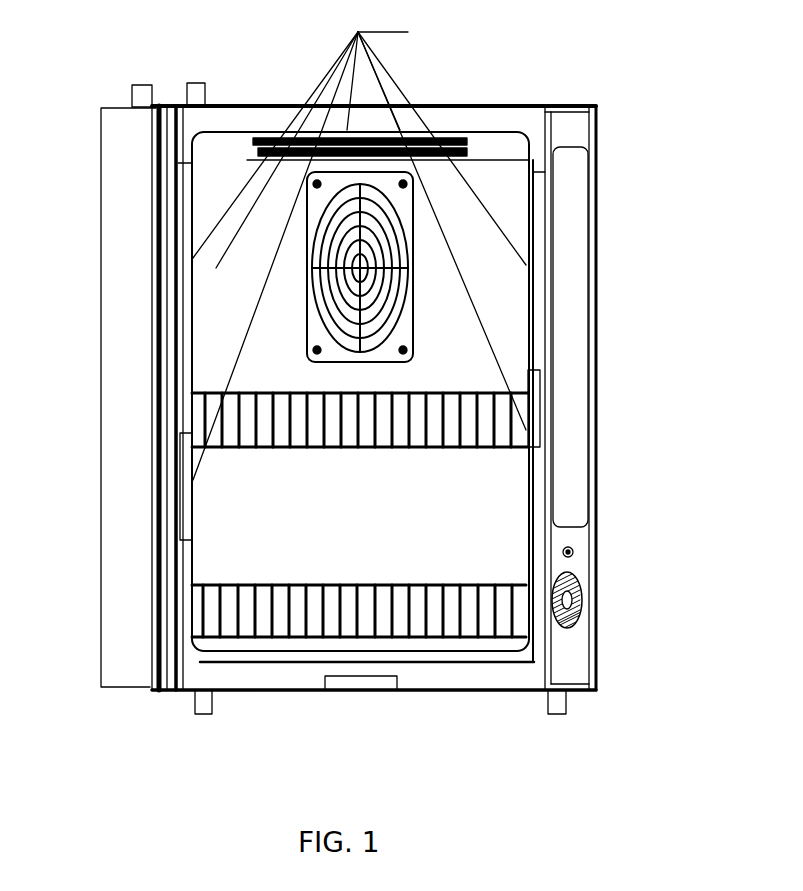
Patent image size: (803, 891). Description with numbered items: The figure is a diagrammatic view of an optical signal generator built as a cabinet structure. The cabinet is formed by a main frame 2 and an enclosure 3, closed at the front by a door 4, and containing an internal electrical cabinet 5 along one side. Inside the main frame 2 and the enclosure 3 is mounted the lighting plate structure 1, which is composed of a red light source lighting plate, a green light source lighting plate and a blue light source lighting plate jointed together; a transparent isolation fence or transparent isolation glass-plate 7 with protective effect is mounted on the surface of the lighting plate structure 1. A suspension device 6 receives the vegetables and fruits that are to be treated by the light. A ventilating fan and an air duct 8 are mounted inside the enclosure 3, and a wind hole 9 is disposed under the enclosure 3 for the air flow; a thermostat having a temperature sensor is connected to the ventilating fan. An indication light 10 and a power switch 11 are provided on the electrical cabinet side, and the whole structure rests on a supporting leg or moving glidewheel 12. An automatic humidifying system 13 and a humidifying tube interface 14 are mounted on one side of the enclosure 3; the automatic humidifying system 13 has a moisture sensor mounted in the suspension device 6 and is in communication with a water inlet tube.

The lighting plate structure 1 is at (378, 27).
The main frame 2 is at (388, 92).
The enclosure 3 is at (374, 366).
The door 4 is at (368, 711).
The internal electrical cabinet 5 is at (588, 361).
The suspension device 6 is at (272, 612).
The transparent isolation fence or transparent isolation glass-plate 7 is at (193, 269).
The ventilating fan and air duct 8 is at (375, 267).
The wind hole 9 is at (349, 706).
The indication light 10 is at (606, 523).
The power switch 11 is at (595, 589).
The supporting leg or moving glidewheel 12 is at (380, 724).
The automatic humidifying system 13 is at (102, 397).
The humidifying tube interface 14 is at (168, 63).